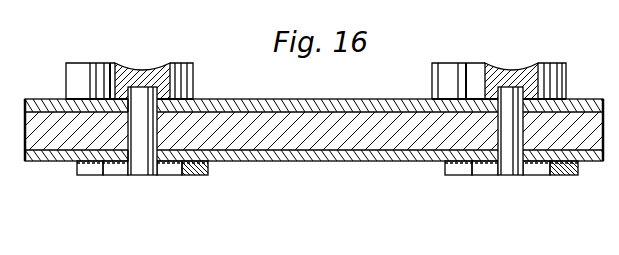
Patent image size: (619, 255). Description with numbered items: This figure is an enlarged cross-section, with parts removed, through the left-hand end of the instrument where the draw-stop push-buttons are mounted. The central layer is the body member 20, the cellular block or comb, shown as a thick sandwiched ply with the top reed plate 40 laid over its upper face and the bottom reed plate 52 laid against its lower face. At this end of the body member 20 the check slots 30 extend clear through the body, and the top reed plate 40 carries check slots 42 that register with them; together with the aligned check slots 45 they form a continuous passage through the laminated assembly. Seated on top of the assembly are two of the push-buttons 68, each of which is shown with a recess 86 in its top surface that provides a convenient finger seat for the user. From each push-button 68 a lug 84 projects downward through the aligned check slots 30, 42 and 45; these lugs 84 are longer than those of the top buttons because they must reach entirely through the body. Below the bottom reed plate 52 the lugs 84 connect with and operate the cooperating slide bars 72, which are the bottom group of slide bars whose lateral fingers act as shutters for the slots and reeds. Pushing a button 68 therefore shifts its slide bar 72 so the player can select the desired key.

The body member 20 is at (308, 133).
The check slots 30 is at (158, 130).
The top reed plate 40 is at (335, 100).
The check slots 42 is at (129, 105).
The check slots 45 is at (129, 160).
The bottom reed plate 52 is at (395, 158).
The push-buttons 68 is at (82, 72).
The slide bars 72 is at (132, 175).
The lugs 84 is at (133, 140).
The recesses 86 is at (143, 72).